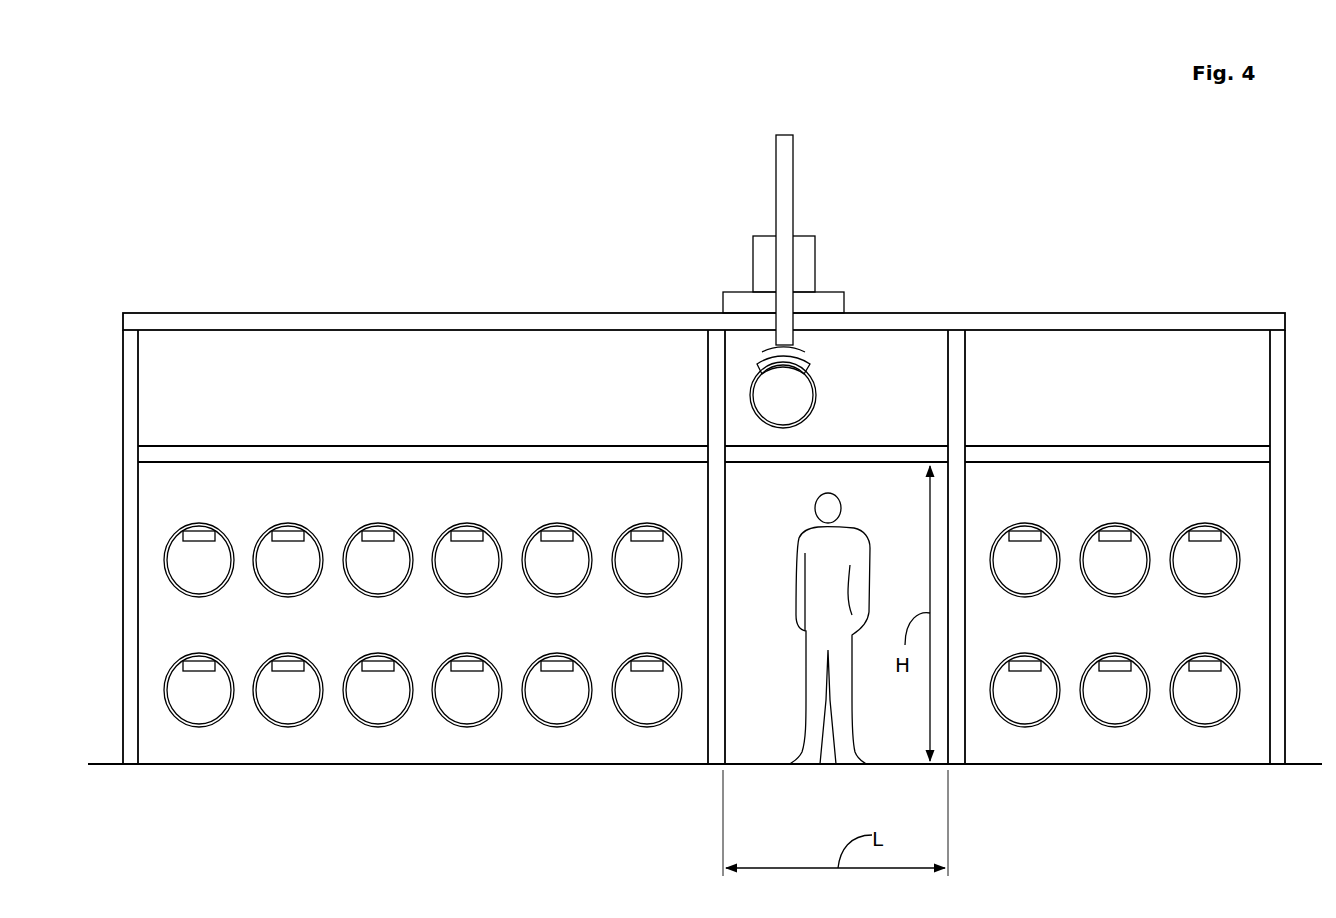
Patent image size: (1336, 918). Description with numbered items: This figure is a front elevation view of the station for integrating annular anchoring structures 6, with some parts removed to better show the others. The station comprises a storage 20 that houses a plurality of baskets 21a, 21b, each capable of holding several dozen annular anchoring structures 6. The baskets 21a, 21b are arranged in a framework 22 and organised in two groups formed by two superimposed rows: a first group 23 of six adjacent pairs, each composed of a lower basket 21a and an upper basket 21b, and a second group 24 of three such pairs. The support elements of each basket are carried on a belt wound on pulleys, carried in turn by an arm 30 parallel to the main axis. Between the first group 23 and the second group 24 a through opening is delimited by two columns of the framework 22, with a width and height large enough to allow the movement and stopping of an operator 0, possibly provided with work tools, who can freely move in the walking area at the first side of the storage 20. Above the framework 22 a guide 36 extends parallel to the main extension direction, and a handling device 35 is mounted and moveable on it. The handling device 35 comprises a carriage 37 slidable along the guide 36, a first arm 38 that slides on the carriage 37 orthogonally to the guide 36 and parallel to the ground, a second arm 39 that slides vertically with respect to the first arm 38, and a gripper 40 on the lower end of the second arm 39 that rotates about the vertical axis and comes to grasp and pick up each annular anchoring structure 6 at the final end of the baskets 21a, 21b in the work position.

The storage 20 is at (236, 210).
The framework 22 is at (104, 386).
The guide 36 is at (1028, 308).
The lower basket 21a is at (270, 744).
The upper basket 21b is at (214, 503).
The arm 30 is at (460, 532).
The first group 23 is at (323, 784).
The second group 24 is at (1138, 784).
The handling device 35 is at (830, 198).
The carriage 37 is at (737, 297).
The first arm 38 is at (805, 252).
The second arm 39 is at (778, 155).
The gripper 40 is at (802, 356).
The annular anchoring structure 6 is at (816, 396).
The operator 0 is at (788, 682).